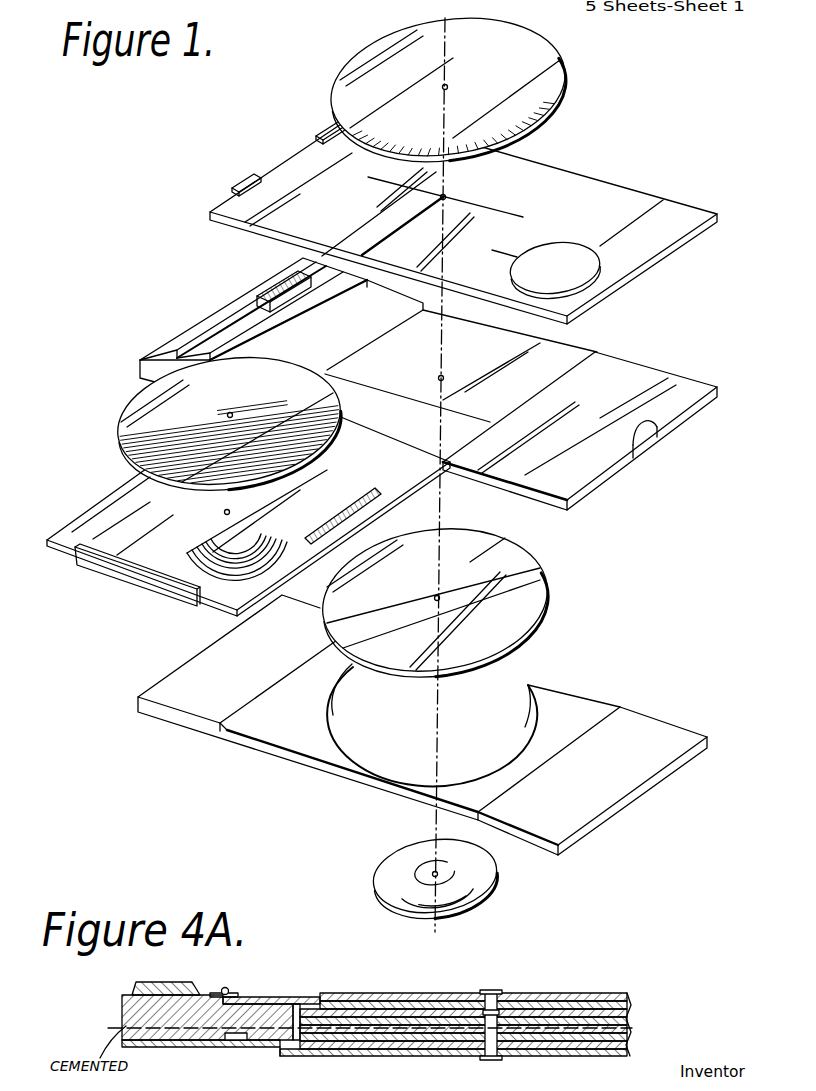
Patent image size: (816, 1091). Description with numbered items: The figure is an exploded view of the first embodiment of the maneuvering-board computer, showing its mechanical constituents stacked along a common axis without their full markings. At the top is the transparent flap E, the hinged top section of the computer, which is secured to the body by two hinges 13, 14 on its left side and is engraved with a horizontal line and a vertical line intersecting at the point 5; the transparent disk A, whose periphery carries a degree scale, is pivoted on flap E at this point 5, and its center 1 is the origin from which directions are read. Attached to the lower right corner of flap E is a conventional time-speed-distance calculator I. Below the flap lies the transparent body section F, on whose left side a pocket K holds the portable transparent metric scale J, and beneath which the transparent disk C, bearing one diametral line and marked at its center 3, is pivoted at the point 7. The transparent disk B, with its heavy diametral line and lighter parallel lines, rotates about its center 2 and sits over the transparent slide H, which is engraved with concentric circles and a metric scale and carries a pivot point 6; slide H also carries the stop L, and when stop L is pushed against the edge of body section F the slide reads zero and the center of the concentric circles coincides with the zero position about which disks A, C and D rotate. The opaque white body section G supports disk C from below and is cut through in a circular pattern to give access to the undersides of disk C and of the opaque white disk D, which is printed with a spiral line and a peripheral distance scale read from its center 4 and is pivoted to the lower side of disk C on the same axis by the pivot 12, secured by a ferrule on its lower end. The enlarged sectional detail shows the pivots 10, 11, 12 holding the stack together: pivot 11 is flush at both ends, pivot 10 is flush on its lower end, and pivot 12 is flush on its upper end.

In FIG. 1, the disk A is at (368, 46).
In FIG. 4A, the disk A is at (392, 994).
In FIG. 1, the disk B is at (130, 397).
In FIG. 1, the disk C is at (542, 548).
In FIG. 4A, the disk C is at (346, 1041).
In FIG. 1, the disk D is at (385, 870).
In FIG. 4A, the disk D is at (418, 1054).
In FIG. 1, the flap E is at (580, 185).
In FIG. 4A, the flap E is at (282, 1000).
In FIG. 1, the body section F is at (622, 368).
In FIG. 4A, the body section F is at (260, 1040).
In FIG. 1, the body section G is at (640, 716).
In FIG. 4A, the body section G is at (222, 1046).
In FIG. 1, the slide H is at (105, 512).
In FIG. 4A, the slide H is at (348, 996).
In FIG. 1, the time-speed-distance calculator I is at (610, 263).
In FIG. 1, the portable scale J is at (272, 294).
In FIG. 4A, the portable scale J is at (178, 990).
In FIG. 1, the pocket K is at (200, 327).
In FIG. 4A, the pocket K is at (130, 982).
In FIG. 1, the stop L is at (104, 568).
In FIG. 1, the center of disk A 1 is at (452, 84).
In FIG. 1, the center of disk B 2 is at (234, 411).
In FIG. 1, the pivot of disc C 3 is at (443, 595).
In FIG. 1, the center of disk D 4 is at (441, 875).
In FIG. 1, the point of intersection 5 is at (452, 194).
In FIG. 1, the pivot point on plate H 6 is at (224, 514).
In FIG. 1, the pivot point of disk C 7 is at (446, 372).
In FIG. 4A, the pivot 10 is at (486, 990).
In FIG. 4A, the pivot 11 is at (500, 1012).
In FIG. 4A, the pivot 12 is at (496, 1061).
In FIG. 1, the hinge 13 is at (318, 128).
In FIG. 4A, the hinge 13 is at (215, 991).
In FIG. 1, the hinge 14 is at (238, 182).